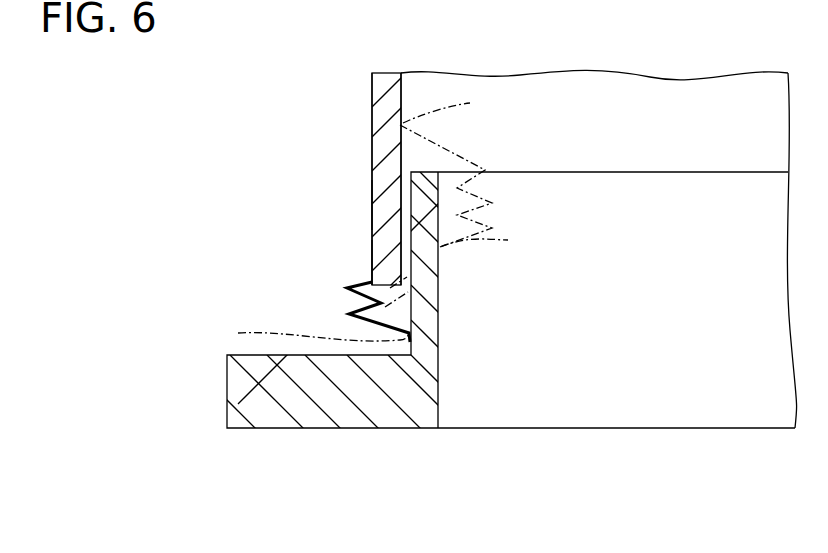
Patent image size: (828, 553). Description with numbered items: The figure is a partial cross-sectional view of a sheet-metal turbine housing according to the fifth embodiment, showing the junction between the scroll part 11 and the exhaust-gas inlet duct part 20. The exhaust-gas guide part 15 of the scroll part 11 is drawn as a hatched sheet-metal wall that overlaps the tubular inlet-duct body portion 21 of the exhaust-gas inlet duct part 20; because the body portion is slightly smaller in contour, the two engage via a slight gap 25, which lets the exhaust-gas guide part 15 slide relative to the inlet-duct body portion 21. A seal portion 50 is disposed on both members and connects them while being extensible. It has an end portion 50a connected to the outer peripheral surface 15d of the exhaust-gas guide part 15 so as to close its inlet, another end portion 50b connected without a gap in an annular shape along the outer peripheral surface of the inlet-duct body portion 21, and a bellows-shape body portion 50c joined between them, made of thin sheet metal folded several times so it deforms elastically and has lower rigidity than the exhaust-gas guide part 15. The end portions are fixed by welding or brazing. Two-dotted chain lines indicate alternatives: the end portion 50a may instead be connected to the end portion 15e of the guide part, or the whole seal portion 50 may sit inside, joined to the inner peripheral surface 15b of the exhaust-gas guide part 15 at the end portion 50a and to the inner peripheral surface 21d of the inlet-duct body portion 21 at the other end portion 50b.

The scroll part 11 is at (340, 100).
The exhaust-gas guide part 15 is at (386, 143).
The inner peripheral surface 15b is at (403, 97).
The outer peripheral surface 15d is at (372, 205).
The end portion 15e is at (375, 250).
The gap 25 is at (372, 178).
The exhaust-gas inlet duct part 20 is at (391, 448).
The inlet-duct body portion 21 is at (432, 305).
The inner peripheral surface 21d is at (439, 345).
The seal portion 50 is at (486, 160).
The end portion 50a is at (323, 265).
The other end portion 50b is at (376, 285).
The bellows-shape body portion 50c is at (347, 313).